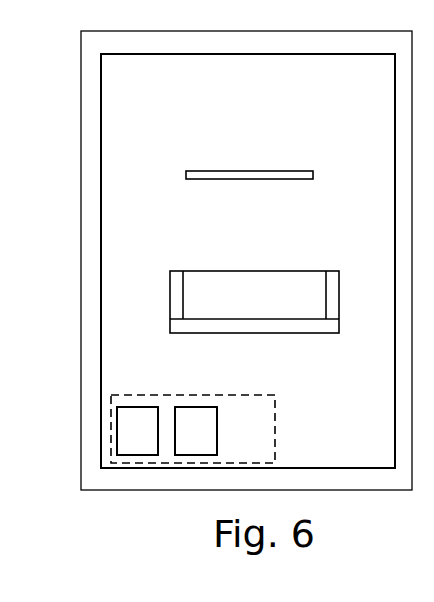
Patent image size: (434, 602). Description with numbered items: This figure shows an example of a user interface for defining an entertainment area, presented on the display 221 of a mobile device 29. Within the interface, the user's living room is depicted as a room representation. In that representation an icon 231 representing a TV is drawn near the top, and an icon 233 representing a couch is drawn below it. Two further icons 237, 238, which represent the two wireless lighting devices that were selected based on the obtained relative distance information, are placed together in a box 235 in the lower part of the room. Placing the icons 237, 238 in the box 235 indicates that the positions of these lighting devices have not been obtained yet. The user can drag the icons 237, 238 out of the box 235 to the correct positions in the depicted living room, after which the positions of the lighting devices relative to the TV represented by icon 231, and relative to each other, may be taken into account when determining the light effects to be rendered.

The mobile device 29 is at (81, 196).
The display 221 is at (101, 88).
The icon representing a TV 231 is at (260, 171).
The icon representing a couch 233 is at (310, 333).
The box 235 is at (193, 429).
The icon representing a wireless lighting device 237 is at (138, 407).
The icon representing a wireless lighting device 238 is at (196, 407).